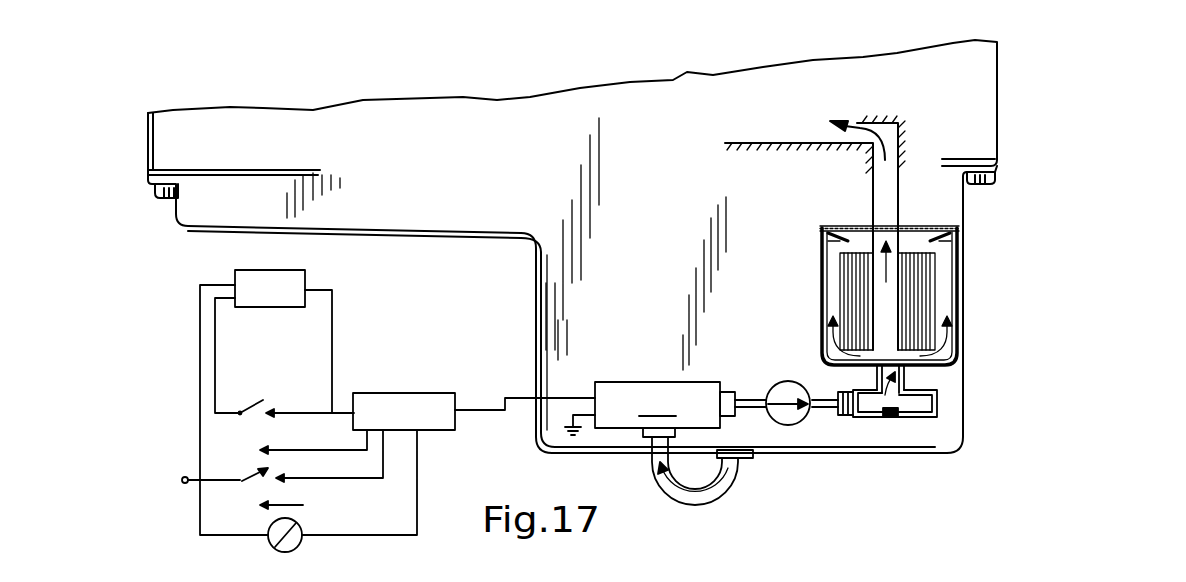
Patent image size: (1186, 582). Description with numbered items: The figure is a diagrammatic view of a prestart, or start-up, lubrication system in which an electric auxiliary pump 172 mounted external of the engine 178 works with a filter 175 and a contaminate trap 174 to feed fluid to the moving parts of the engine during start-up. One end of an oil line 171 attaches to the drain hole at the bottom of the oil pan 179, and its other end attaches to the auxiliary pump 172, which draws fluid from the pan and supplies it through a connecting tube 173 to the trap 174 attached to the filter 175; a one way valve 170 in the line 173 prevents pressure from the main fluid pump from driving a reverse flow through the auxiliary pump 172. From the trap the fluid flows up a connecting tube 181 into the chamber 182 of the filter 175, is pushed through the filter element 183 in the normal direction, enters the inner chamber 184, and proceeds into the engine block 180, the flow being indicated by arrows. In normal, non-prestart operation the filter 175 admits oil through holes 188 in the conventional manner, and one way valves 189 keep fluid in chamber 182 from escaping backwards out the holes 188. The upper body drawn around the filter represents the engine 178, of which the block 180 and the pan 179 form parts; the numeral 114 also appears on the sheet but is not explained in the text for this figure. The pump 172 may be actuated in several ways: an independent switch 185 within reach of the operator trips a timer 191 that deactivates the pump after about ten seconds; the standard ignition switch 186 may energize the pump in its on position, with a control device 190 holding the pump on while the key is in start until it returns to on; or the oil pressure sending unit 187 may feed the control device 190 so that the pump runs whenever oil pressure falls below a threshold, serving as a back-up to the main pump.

The tank body 114 is at (640, 0).
The one way valve 170 is at (791, 382).
The oil line 171 is at (664, 467).
The auxiliary pump 172 is at (642, 409).
The connecting tube 173 is at (752, 393).
The contaminate trap 174 is at (937, 402).
The filter 175 is at (957, 308).
The engine 178 is at (940, 42).
The oil pan 179 is at (546, 343).
The engine block 180 is at (810, 122).
The connecting tube 181 is at (905, 386).
The chamber 182 is at (826, 268).
The filter element 183 is at (928, 283).
The inner chamber 184 is at (878, 297).
The independent switch 185 is at (262, 397).
The ignition switch 186 is at (254, 474).
The oil pressure sending unit 187 is at (302, 530).
The holes 188 is at (838, 226).
The one way valves 189 is at (822, 241).
The control device 190 is at (405, 392).
The timer 191 is at (282, 268).